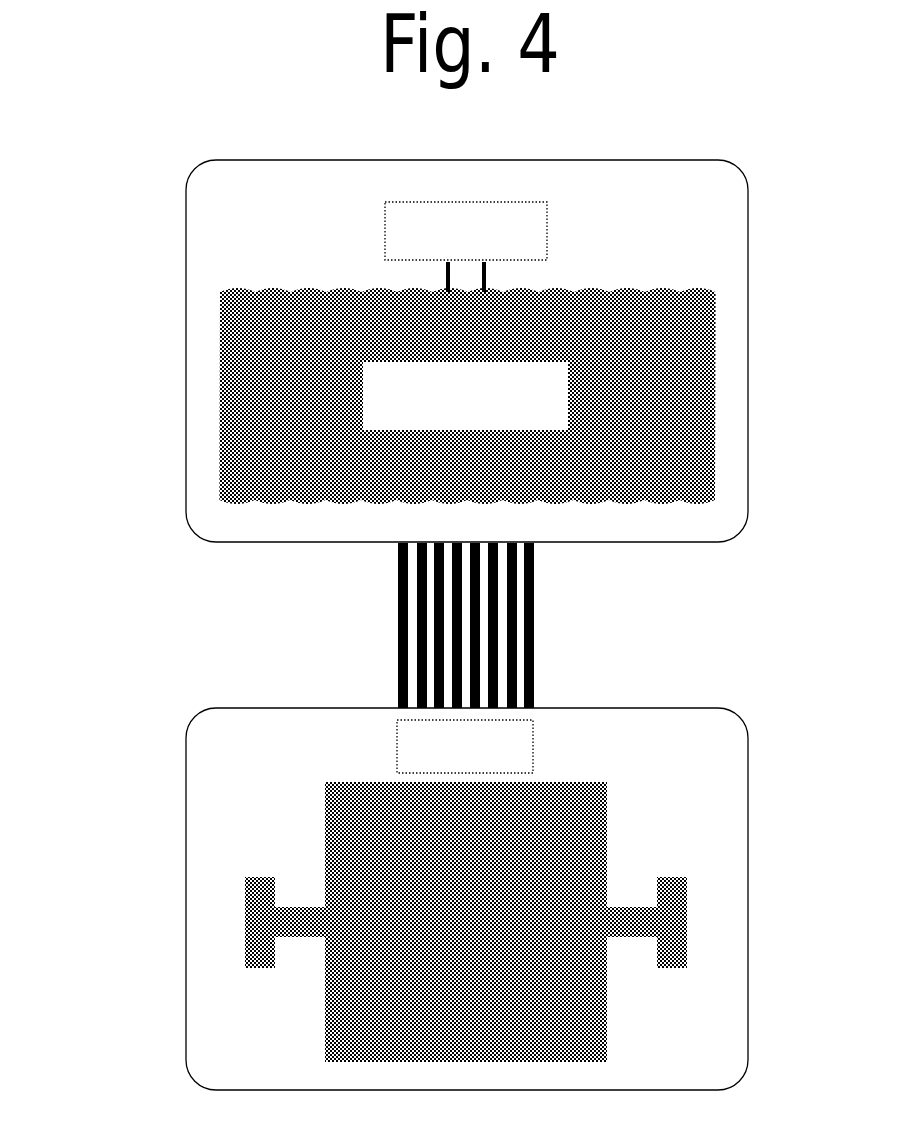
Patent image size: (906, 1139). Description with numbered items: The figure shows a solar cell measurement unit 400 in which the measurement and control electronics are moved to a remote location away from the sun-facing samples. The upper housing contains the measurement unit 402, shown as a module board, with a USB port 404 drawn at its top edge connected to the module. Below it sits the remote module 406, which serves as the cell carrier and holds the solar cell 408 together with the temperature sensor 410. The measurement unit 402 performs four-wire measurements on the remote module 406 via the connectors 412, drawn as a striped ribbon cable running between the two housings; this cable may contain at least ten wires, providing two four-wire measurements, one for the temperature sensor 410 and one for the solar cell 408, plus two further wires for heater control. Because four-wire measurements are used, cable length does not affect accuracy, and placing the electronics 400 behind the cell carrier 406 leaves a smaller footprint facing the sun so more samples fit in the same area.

The solar cell measurement unit 400 is at (182, 144).
The measurement unit 402 is at (205, 369).
The USB connector 404 is at (415, 196).
The remote module 406 is at (182, 876).
The solar cell 408 is at (302, 795).
The temperature sensor 410 is at (394, 725).
The connectors 412 is at (594, 607).